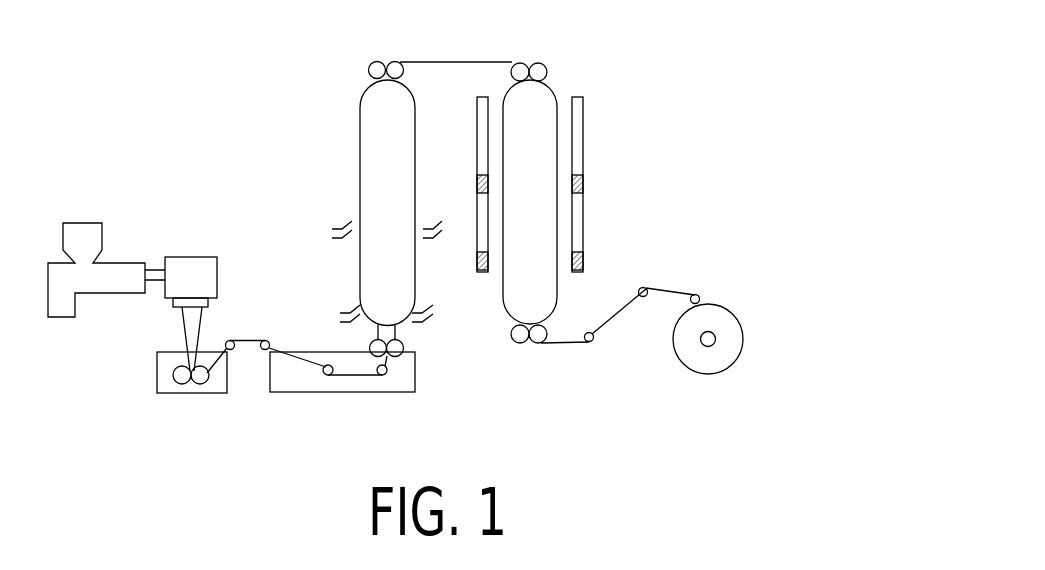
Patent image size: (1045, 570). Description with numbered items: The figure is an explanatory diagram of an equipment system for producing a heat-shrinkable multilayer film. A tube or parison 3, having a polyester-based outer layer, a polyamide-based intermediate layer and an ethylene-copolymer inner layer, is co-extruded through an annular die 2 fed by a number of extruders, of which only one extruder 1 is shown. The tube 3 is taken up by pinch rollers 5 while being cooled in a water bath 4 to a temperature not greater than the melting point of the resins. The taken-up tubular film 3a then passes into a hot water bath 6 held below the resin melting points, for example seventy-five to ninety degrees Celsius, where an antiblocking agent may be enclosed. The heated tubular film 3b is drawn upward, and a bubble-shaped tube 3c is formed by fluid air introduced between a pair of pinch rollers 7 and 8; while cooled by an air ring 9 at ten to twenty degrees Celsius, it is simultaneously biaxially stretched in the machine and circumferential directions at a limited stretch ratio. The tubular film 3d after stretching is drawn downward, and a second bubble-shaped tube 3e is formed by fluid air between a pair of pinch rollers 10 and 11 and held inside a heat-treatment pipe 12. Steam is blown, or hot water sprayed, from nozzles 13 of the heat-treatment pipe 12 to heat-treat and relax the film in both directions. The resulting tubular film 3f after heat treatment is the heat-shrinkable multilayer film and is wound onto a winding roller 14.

The extruder 1 is at (122, 260).
The annular die 2 is at (190, 255).
The tube (parison) 3 is at (182, 327).
The taken-up tubular film 3a is at (245, 340).
The heated tubular film 3b is at (388, 365).
The bubble-shaped tube 3c is at (415, 273).
The tubular film after stretching 3d is at (457, 62).
The bubble-shaped tube 3e is at (550, 288).
The tubular film after heat treatment 3f is at (617, 317).
The water bath 4 is at (215, 387).
The pinch rollers 5 is at (183, 380).
The hot water bath 6 is at (392, 385).
The pinch rollers 7 is at (403, 343).
The pinch rollers 8 is at (403, 75).
The air ring 9 is at (344, 310).
The pinch rollers 10 is at (548, 72).
The pinch rollers 11 is at (540, 343).
The heat-treatment pipe 12 is at (582, 122).
The nozzles 13 is at (583, 187).
The winding roller 14 is at (687, 368).